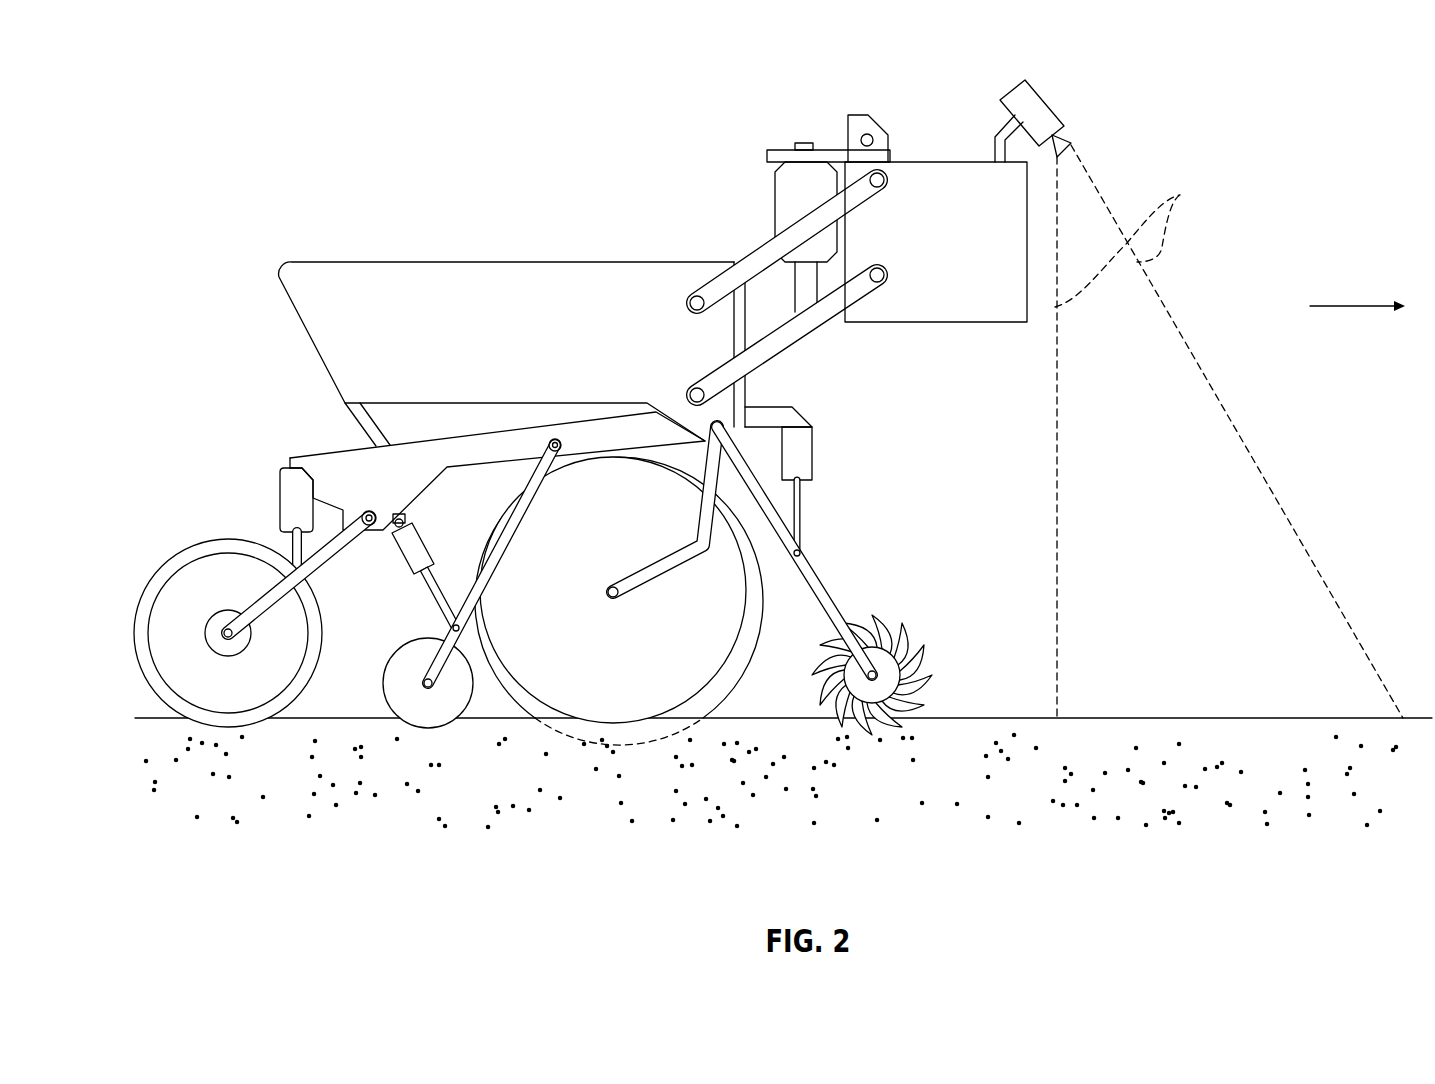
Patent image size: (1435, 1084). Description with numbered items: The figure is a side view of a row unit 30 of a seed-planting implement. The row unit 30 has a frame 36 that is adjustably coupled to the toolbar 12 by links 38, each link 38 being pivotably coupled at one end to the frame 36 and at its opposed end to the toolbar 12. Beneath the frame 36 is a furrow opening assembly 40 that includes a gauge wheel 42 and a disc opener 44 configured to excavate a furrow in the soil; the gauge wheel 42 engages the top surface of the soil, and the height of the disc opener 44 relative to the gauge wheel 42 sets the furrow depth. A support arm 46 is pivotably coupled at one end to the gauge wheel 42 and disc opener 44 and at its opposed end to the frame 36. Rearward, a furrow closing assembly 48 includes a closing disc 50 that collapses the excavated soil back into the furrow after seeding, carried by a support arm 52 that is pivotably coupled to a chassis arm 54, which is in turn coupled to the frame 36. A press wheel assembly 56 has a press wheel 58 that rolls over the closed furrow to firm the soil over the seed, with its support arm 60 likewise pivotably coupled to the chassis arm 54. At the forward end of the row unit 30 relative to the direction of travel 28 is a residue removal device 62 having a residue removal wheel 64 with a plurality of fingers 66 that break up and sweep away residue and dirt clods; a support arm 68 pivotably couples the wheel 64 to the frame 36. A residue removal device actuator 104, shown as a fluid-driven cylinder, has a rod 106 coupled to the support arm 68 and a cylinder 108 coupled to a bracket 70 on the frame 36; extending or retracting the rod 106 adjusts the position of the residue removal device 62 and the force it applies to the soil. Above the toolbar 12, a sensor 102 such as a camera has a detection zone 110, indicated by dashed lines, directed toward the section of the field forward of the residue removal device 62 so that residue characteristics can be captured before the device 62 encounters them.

The toolbar 12 is at (918, 323).
The direction of travel 28 is at (1352, 305).
The row unit 30 is at (300, 178).
The frame 36 is at (522, 262).
The links 38 is at (866, 265).
The furrow opening assembly 40 is at (634, 619).
The gauge wheel 42 is at (746, 566).
The disc opener 44 is at (560, 742).
The support arm 46 is at (653, 588).
The furrow closing assembly 48 is at (442, 640).
The closing disc 50 is at (384, 694).
The support arm 52 is at (538, 472).
The chassis arm 54 is at (322, 450).
The press wheel assembly 56 is at (228, 600).
The press wheel 58 is at (137, 637).
The support arm 60 is at (258, 605).
The residue removal device 62 is at (854, 581).
The residue removal wheel 64 is at (886, 628).
The fingers 66 is at (900, 636).
The support arm 68 is at (822, 595).
The bracket 70 is at (747, 407).
The sensor 102 is at (1046, 103).
The residue removal device actuator 104 is at (846, 482).
The rod 106 is at (802, 526).
The cylinder 108 is at (812, 452).
The detection zone 110 is at (1180, 195).